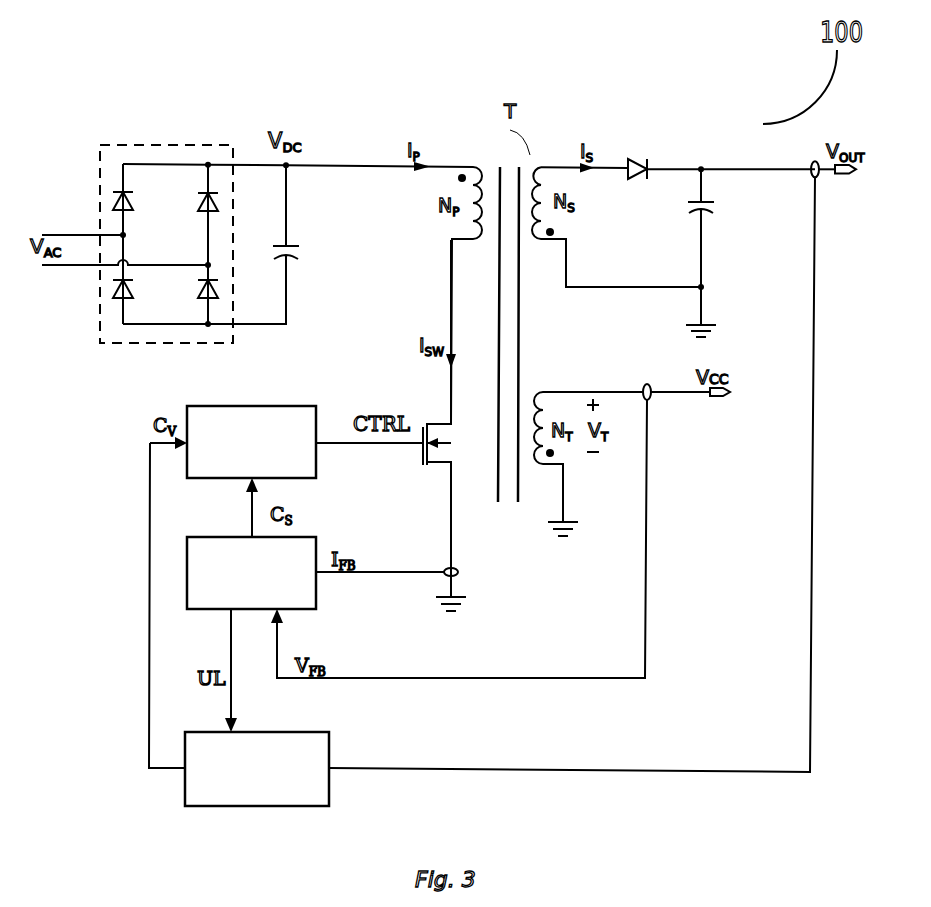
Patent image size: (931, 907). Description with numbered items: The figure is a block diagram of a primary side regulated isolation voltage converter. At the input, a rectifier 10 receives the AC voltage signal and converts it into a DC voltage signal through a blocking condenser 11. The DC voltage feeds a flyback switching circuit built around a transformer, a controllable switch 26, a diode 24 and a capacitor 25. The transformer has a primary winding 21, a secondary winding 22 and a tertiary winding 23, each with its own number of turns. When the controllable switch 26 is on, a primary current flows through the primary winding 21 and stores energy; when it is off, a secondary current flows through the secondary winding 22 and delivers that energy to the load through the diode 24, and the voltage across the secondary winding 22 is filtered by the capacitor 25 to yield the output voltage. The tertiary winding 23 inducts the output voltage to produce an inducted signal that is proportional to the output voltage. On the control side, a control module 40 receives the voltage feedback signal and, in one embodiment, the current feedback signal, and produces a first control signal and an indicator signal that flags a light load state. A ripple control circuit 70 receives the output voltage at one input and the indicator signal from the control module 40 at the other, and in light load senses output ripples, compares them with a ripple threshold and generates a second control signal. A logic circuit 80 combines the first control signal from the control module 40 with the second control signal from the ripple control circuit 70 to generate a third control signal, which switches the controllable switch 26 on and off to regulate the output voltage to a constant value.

The rectifier 10 is at (100, 305).
The blocking condenser 11 is at (253, 243).
The primary winding 21 is at (452, 232).
The secondary winding 22 is at (572, 231).
The tertiary winding 23 is at (568, 388).
The diode 24 is at (721, 155).
The capacitor 25 is at (715, 251).
The controllable switch 26 is at (427, 421).
The control module 40 is at (228, 612).
The ripple control circuit 70 is at (233, 808).
The logic circuit 80 is at (228, 482).